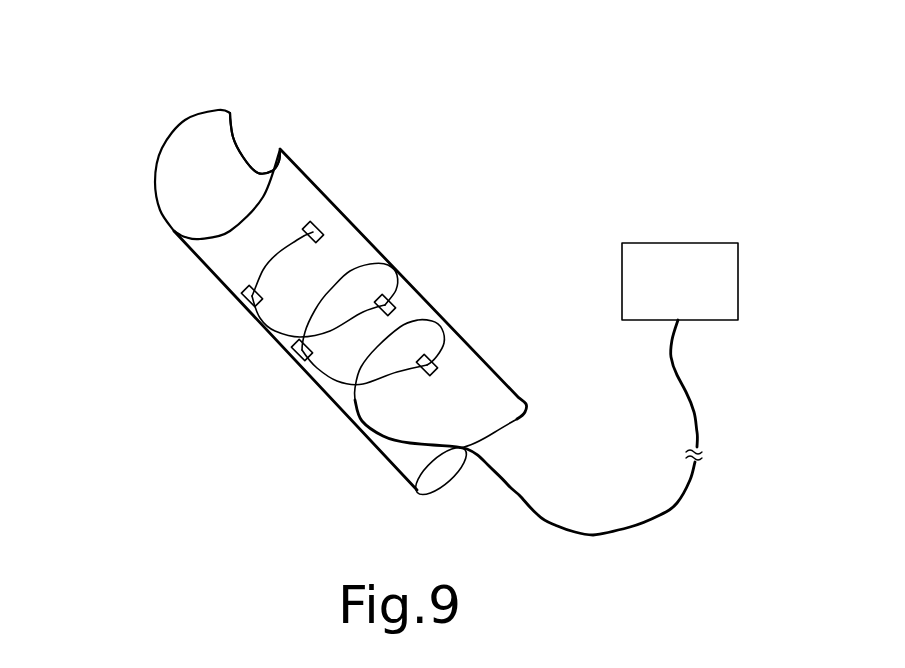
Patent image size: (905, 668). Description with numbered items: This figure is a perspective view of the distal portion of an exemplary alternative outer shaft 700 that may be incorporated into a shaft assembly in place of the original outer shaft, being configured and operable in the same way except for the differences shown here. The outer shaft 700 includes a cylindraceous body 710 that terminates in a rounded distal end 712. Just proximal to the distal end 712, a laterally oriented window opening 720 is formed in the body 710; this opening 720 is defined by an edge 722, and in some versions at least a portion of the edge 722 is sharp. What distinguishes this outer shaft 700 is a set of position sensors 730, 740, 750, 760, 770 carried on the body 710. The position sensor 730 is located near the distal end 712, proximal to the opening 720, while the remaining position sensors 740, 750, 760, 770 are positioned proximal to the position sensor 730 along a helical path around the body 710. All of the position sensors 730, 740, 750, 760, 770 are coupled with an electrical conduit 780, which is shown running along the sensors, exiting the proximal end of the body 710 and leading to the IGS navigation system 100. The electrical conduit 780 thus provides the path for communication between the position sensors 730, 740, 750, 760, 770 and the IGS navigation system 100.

The IGS navigation system 100 is at (700, 293).
The outer shaft 700 is at (468, 188).
The cylindraceous body 710 is at (217, 266).
The rounded distal end 712 is at (172, 148).
The window opening 720 is at (240, 127).
The edge 722 is at (268, 158).
The position sensor 730 is at (321, 227).
The position sensor 740 is at (250, 292).
The position sensor 750 is at (384, 308).
The position sensor 760 is at (300, 346).
The position sensor 770 is at (439, 366).
The electrical conduit 780 is at (358, 397).